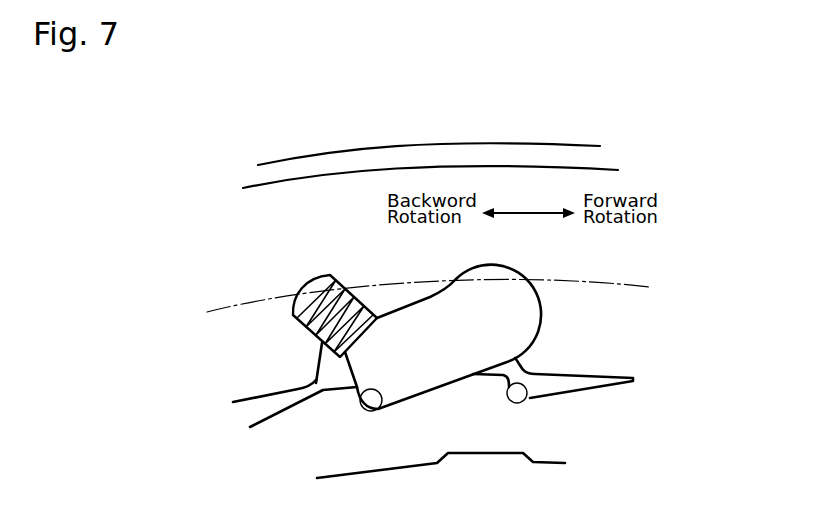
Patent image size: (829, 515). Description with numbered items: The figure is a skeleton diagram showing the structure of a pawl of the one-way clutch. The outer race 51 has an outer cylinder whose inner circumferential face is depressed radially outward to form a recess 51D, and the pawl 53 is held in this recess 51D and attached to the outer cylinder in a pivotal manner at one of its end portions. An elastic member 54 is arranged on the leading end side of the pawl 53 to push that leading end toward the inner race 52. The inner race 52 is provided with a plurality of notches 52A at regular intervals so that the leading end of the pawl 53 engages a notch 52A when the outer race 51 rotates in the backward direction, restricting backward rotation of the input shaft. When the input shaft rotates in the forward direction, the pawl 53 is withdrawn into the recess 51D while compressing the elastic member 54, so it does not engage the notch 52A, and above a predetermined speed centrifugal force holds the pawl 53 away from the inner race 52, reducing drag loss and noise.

The outer race 51 is at (453, 160).
The recess 51D is at (407, 307).
The inner race 52 is at (567, 443).
The notch 52A is at (383, 410).
The pawl 53 is at (509, 340).
The elastic member 54 is at (304, 336).